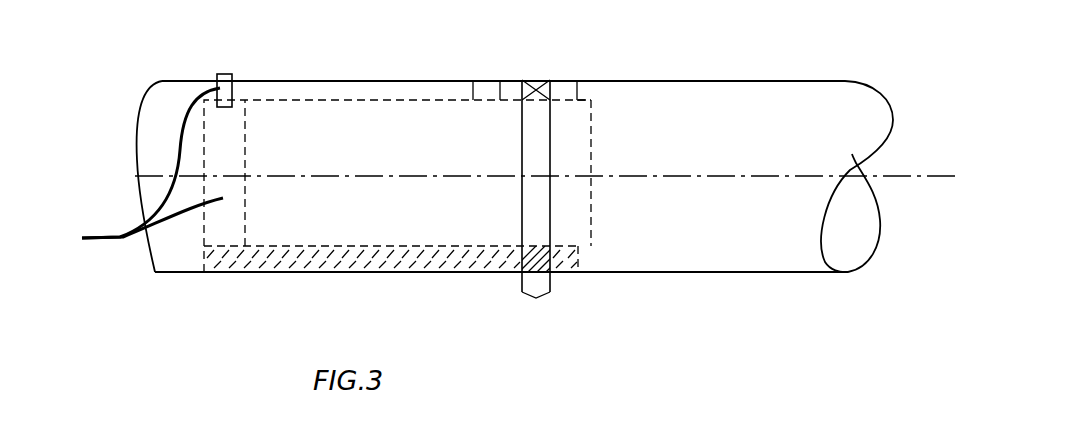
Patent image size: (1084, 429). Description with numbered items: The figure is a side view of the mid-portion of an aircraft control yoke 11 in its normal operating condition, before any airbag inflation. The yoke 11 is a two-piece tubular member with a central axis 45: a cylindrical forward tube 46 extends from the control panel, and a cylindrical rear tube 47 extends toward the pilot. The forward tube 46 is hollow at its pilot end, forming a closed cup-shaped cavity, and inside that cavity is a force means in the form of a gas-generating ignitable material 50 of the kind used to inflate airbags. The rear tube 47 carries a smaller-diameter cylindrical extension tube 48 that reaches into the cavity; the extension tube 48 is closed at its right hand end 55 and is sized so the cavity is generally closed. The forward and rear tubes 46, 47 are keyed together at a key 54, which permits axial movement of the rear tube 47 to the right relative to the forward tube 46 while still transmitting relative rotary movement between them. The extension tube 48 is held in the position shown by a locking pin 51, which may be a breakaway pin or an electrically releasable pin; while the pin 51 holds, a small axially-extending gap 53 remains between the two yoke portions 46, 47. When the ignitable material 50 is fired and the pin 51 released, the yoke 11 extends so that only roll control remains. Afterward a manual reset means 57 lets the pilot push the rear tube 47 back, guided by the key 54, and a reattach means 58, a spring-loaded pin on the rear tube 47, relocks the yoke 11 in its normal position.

The control yoke 11 is at (856, 73).
The central axis 45 is at (918, 176).
The forward tube 46 is at (175, 248).
The rear tube 47 is at (735, 258).
The extension tube 48 is at (537, 228).
The gas-generating ignitable material 50 is at (232, 215).
The locking pin 51 is at (218, 75).
The axially-extending gap 53 is at (536, 297).
The key 54 is at (473, 258).
The right hand end 55 is at (596, 206).
The manual reset means 57 is at (103, 238).
The reattach means 58 is at (536, 84).